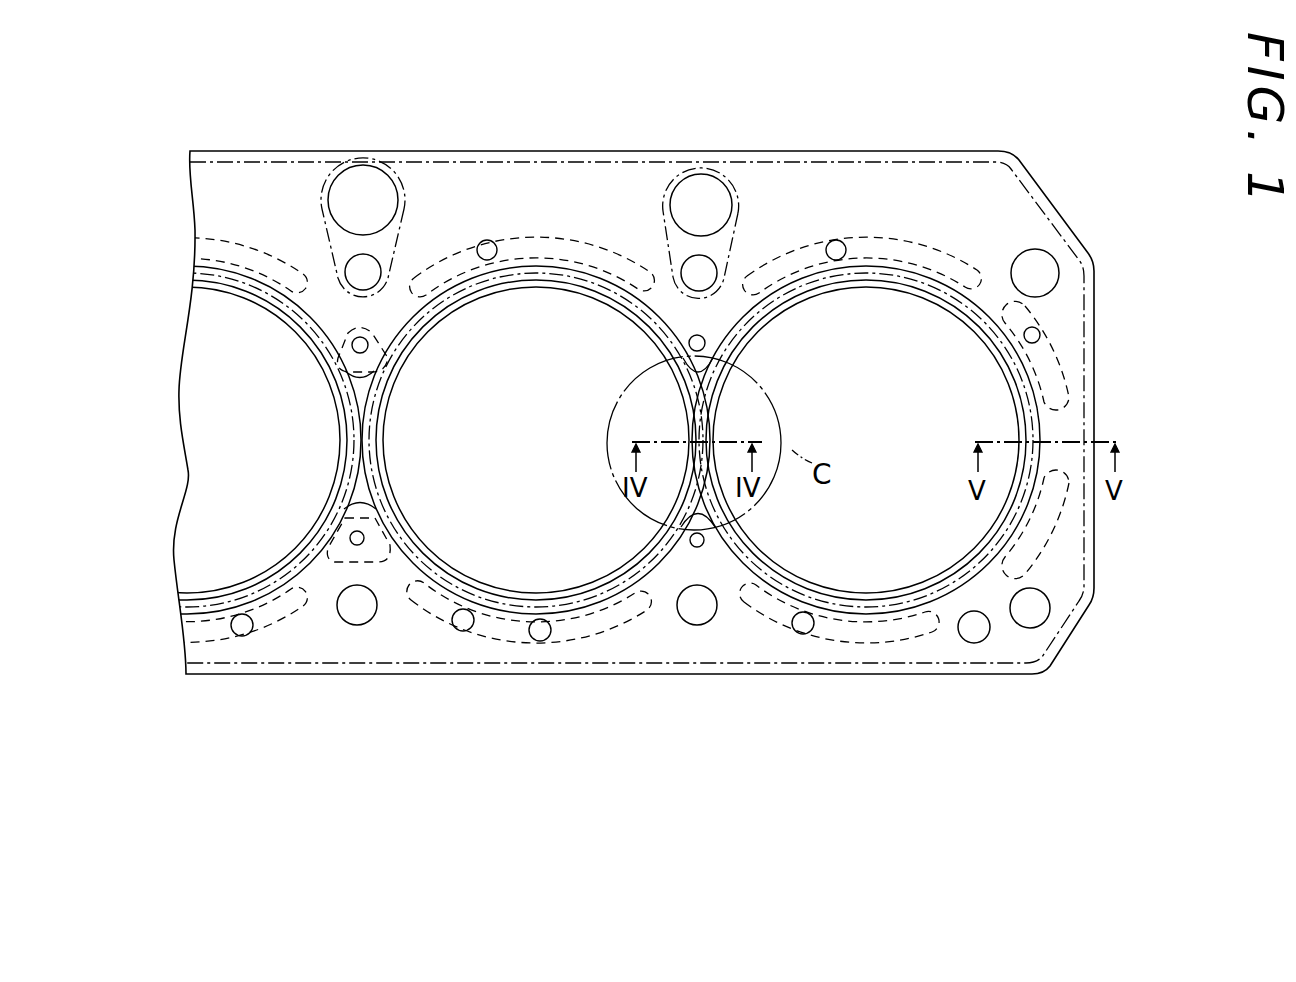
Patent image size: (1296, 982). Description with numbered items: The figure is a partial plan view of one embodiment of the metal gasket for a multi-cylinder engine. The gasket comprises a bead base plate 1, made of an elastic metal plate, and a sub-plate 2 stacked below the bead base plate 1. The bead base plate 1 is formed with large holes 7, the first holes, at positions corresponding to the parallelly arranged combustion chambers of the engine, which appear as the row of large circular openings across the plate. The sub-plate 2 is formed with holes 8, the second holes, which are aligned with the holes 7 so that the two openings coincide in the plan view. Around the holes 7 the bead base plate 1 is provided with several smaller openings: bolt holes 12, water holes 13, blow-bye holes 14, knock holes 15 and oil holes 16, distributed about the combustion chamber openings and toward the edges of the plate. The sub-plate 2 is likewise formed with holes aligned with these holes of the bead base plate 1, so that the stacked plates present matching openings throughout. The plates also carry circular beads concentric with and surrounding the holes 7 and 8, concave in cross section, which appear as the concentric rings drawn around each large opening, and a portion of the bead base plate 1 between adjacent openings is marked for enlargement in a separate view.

The bead base plate 1 is at (985, 150).
The sub-plate 2 is at (635, 357).
The holes 7 is at (285, 324).
The holes 8 is at (534, 440).
The bolt holes 12 is at (356, 270).
The water holes 13 is at (488, 248).
The blow-bye holes 14 is at (362, 183).
The knock holes 15 is at (1047, 263).
The oil holes 16 is at (975, 641).